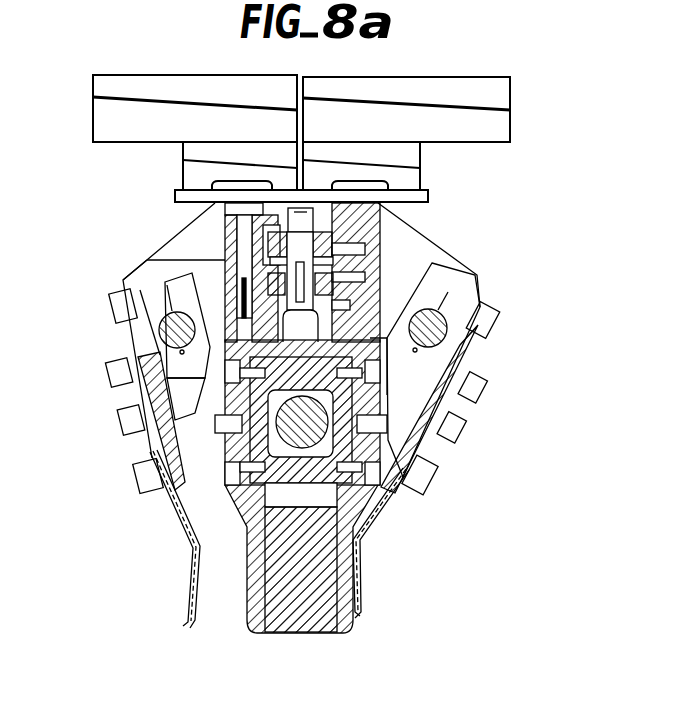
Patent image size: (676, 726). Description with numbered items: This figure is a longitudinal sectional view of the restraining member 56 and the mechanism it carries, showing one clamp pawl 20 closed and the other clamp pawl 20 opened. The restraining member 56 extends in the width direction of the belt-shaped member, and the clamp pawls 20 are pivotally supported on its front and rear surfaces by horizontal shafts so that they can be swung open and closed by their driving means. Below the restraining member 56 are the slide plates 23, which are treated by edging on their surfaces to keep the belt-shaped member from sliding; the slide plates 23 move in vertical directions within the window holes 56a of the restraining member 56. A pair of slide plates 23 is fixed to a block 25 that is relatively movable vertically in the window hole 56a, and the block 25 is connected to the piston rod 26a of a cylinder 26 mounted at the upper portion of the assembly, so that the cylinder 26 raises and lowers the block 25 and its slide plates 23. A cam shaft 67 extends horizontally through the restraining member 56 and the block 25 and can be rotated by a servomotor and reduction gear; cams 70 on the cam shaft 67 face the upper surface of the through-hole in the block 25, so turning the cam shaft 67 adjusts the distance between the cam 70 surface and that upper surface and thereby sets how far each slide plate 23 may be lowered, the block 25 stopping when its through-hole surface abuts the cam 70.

The clamp pawl 20 is at (142, 437).
The slide plate 23 is at (237, 513).
The block 25 is at (318, 382).
The cylinder 26 is at (350, 235).
The piston rod 26a is at (377, 303).
The restraining member 56 is at (277, 633).
The window hole 56a is at (360, 560).
The cam shaft 67 is at (388, 460).
The cam 70 is at (380, 405).